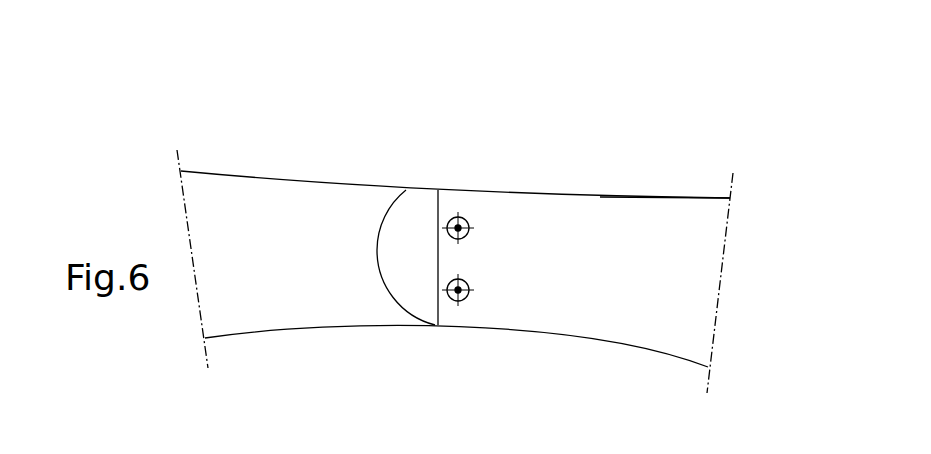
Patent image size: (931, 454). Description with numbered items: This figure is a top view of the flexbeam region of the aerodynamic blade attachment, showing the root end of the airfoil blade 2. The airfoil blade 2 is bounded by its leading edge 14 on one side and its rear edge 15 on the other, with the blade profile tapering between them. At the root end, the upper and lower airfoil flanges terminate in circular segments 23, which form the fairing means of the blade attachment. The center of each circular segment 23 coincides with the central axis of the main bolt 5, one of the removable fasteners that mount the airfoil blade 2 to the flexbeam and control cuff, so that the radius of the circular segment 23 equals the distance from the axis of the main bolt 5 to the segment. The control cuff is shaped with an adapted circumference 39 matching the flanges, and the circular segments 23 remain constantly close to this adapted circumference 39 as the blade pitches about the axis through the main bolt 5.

The leading edge 14 is at (662, 188).
The airfoil blade 2 is at (692, 262).
The rear edge 15 is at (660, 347).
The circular segment 23 is at (390, 213).
The adapted circumference 39 is at (388, 292).
The main bolt 5 is at (470, 222).